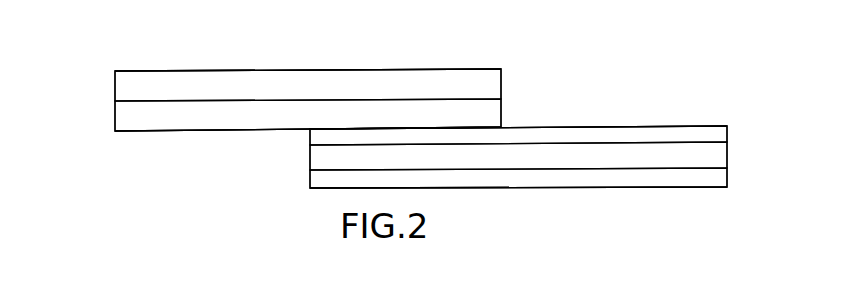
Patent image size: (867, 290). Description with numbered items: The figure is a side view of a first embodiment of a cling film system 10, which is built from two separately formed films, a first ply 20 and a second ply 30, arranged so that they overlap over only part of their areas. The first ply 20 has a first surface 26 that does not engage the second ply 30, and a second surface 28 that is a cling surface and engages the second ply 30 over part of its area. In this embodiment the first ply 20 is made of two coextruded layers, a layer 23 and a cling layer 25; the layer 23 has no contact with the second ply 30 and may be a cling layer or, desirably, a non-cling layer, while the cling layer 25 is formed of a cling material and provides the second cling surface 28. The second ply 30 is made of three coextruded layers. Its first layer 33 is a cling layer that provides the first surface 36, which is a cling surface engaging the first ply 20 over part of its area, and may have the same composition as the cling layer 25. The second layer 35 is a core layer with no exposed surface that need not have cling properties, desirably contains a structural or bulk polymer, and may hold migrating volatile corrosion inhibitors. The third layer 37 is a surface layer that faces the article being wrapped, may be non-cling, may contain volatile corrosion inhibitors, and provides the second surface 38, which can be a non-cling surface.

The cling film system 10 is at (684, 218).
The first ply 20 is at (113, 77).
The layer 23 is at (128, 88).
The cling layer 25 is at (114, 122).
The first surface 26 is at (210, 70).
The second surface 28 is at (243, 132).
The second ply 30 is at (727, 187).
The first layer 33 is at (720, 131).
The second layer 35 is at (717, 154).
The third layer 37 is at (719, 178).
The first surface 36 is at (560, 126).
The second surface 38 is at (561, 187).